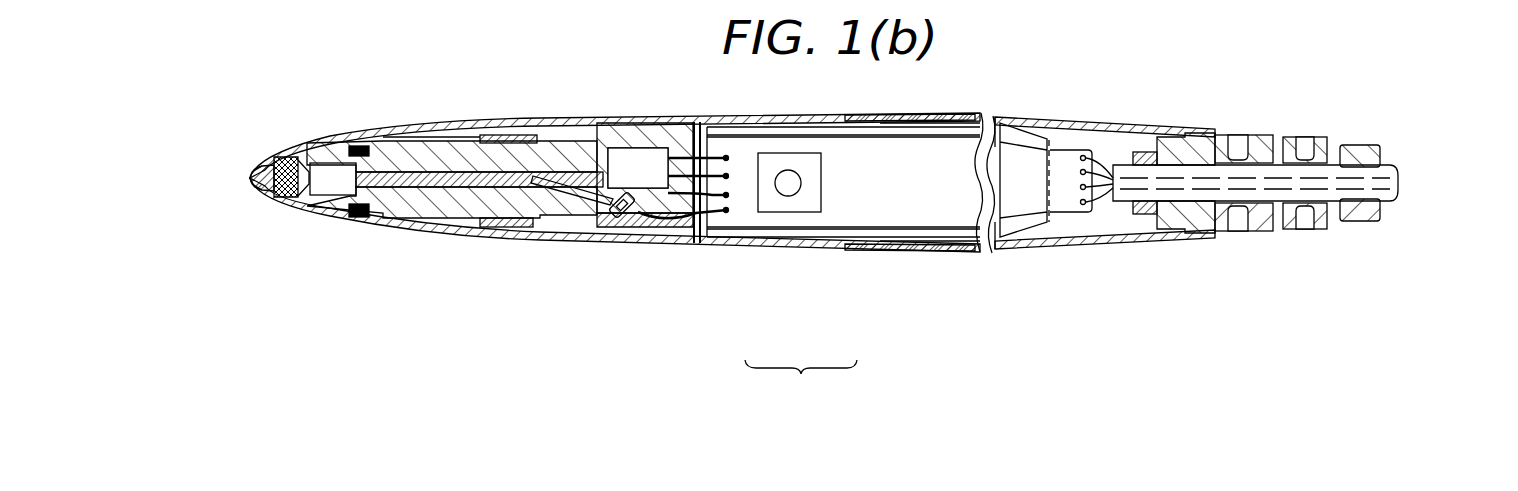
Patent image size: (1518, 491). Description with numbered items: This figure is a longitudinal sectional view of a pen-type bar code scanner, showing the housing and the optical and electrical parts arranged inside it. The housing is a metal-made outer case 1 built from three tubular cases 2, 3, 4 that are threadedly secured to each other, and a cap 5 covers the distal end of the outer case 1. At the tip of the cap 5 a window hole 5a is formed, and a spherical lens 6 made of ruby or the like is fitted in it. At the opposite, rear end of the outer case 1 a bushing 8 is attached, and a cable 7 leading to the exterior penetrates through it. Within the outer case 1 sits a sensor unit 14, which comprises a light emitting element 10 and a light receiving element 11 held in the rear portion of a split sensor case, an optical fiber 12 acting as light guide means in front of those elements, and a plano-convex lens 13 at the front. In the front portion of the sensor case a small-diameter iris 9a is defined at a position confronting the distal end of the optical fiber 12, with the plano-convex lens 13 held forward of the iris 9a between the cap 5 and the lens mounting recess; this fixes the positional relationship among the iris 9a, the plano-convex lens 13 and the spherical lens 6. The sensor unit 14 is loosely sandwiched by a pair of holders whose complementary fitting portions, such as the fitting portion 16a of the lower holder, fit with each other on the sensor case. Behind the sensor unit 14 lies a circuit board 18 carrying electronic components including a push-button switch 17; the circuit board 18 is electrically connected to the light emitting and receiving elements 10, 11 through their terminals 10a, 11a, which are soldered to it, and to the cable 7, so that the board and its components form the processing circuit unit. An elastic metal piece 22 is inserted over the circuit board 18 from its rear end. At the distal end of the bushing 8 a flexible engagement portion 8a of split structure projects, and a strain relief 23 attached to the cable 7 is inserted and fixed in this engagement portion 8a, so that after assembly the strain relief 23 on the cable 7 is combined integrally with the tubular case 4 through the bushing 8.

The outer case 1 is at (801, 384).
The tubular case 2 is at (700, 246).
The tubular case 3 is at (790, 250).
The tubular case 4 is at (897, 250).
The cap 5 is at (302, 214).
The window hole 5a is at (252, 172).
The spherical lens 6 is at (254, 190).
The cable 7 is at (1330, 177).
The bushing 8 is at (1214, 130).
The engagement portion 8a is at (1172, 151).
The iris 9a is at (304, 166).
The light emitting element 10 is at (636, 162).
The terminals 10a is at (698, 156).
The light receiving element 11 is at (612, 222).
The terminals 11a is at (642, 216).
The optical fiber 12 is at (428, 168).
The plano-convex lens 13 is at (276, 160).
The sensor unit 14 is at (422, 226).
The fitting portion 16a is at (514, 228).
The push-button switch 17 is at (797, 160).
The circuit board 18 is at (934, 150).
The elastic metal piece 22 is at (1024, 230).
The strain relief 23 is at (1141, 152).